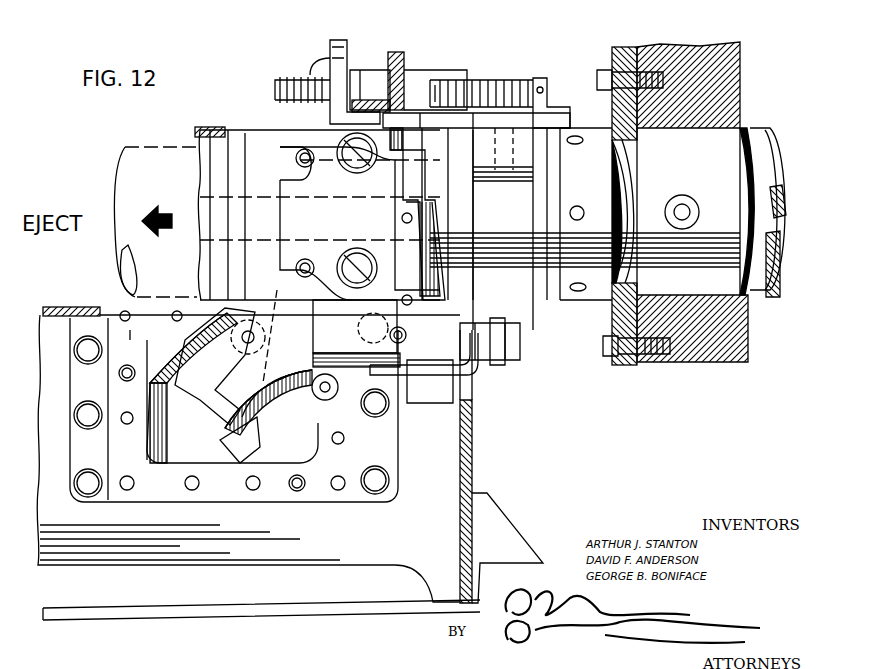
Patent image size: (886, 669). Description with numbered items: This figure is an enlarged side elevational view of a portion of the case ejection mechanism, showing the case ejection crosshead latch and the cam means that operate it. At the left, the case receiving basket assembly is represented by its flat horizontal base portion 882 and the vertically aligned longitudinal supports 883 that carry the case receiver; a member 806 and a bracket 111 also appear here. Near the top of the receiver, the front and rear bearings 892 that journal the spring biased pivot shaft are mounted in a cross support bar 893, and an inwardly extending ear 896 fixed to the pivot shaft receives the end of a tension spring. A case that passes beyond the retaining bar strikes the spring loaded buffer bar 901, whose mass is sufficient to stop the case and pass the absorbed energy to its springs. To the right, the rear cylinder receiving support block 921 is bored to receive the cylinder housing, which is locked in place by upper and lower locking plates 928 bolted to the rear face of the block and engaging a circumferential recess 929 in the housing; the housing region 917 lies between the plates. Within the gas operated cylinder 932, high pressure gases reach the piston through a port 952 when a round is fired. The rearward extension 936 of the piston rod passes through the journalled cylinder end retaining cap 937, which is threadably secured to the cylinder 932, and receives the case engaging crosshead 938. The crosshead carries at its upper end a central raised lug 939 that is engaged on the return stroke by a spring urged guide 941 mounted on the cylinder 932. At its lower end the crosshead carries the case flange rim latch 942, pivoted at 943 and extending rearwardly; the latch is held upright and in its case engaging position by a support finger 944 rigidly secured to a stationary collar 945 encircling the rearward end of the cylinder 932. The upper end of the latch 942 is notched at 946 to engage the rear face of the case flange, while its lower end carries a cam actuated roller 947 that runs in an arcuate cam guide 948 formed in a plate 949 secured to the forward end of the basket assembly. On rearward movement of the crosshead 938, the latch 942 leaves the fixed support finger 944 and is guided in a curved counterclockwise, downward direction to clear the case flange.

The bracket 111 is at (545, 72).
The plate 806 is at (70, 307).
The base portion 882 is at (310, 606).
The longitudinal supports 883 is at (325, 531).
The bearings 892 is at (380, 70).
The cross support bars 893 is at (405, 60).
The ears 896 is at (338, 45).
The buffer bar 901 is at (280, 226).
The cylinder 917 is at (720, 145).
The support block 921 is at (745, 58).
The locking plates 928 is at (614, 108).
The circumferential recess 929 is at (632, 165).
The cylinder 932 is at (708, 181).
The rearward extension 936 is at (430, 210).
The cylinder end retaining cap 937 is at (474, 152).
The case engaging crosshead 938 is at (430, 278).
The raised lug 939 is at (370, 100).
The spring urged guide 941 is at (450, 112).
The case flange rim latch 942 is at (270, 373).
The pivot 943 is at (267, 335).
The support finger 944 is at (418, 378).
The stationary collar 945 is at (490, 300).
The notch 946 is at (190, 360).
The cam actuated roller 947 is at (325, 395).
The arcuate cam guide 948 is at (278, 413).
The plate 949 is at (406, 340).
The port 952 is at (690, 210).